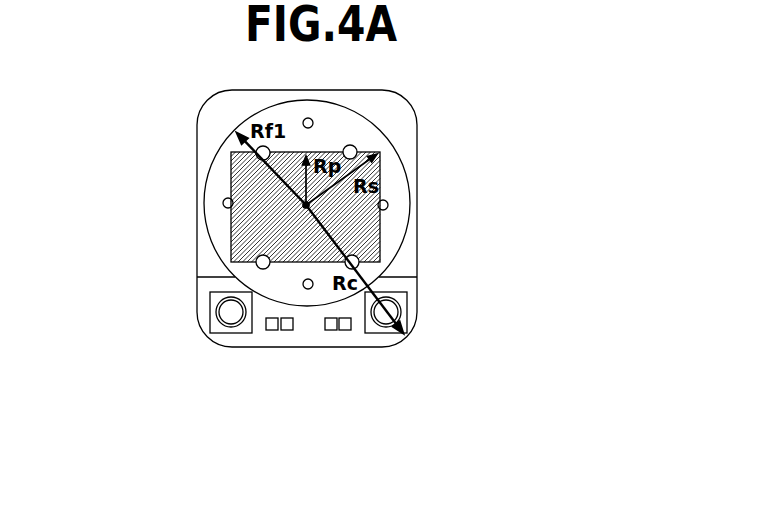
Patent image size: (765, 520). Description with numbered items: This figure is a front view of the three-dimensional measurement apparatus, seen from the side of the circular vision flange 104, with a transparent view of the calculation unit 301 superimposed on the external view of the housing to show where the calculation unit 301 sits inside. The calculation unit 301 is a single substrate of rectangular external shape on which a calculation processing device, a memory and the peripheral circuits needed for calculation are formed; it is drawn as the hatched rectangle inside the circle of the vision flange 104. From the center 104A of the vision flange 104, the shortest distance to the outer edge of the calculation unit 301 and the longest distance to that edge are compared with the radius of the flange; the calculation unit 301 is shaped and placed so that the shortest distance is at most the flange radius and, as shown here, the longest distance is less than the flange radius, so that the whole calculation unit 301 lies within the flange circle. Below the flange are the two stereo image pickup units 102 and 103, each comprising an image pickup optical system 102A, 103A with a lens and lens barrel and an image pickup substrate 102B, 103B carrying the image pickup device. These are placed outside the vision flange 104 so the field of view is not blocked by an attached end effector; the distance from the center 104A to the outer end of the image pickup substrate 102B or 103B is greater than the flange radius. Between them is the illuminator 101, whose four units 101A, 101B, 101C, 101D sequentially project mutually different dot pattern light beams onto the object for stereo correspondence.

The vision flange 104 is at (375, 122).
The center of the circle of the vision flange 104A is at (306, 205).
The calculation unit 301 is at (233, 173).
The image pickup unit 103 is at (138, 315).
The image pickup optical system 103A is at (228, 317).
The image pickup substrate 103B is at (209, 294).
The image pickup unit 102 is at (477, 316).
The image pickup optical system 102A is at (407, 312).
The image pickup substrate 102B is at (407, 297).
The illuminator 101 is at (305, 403).
The unit 101A is at (271, 331).
The unit 101B is at (287, 331).
The unit 101C is at (330, 331).
The unit 101D is at (378, 381).